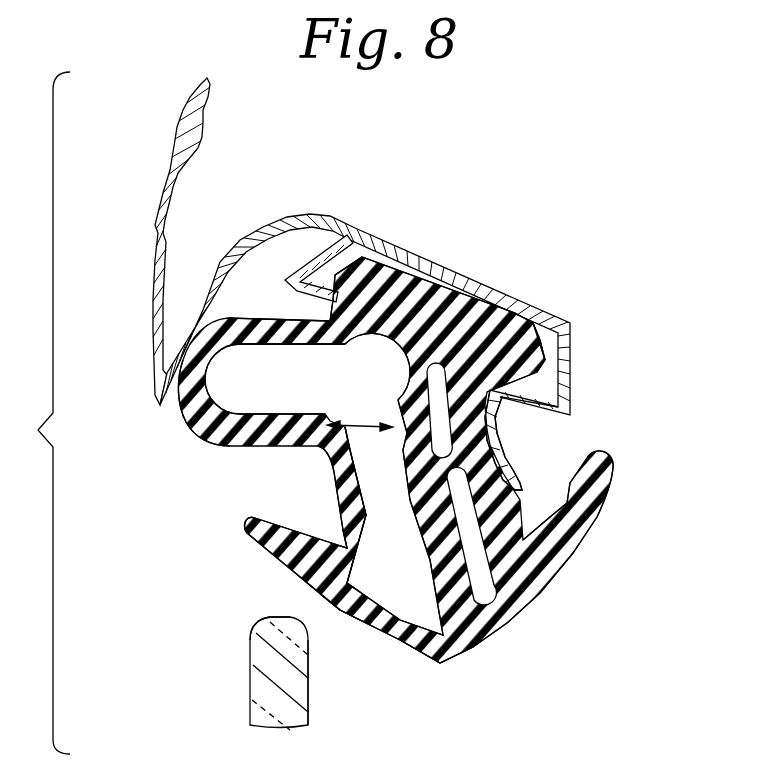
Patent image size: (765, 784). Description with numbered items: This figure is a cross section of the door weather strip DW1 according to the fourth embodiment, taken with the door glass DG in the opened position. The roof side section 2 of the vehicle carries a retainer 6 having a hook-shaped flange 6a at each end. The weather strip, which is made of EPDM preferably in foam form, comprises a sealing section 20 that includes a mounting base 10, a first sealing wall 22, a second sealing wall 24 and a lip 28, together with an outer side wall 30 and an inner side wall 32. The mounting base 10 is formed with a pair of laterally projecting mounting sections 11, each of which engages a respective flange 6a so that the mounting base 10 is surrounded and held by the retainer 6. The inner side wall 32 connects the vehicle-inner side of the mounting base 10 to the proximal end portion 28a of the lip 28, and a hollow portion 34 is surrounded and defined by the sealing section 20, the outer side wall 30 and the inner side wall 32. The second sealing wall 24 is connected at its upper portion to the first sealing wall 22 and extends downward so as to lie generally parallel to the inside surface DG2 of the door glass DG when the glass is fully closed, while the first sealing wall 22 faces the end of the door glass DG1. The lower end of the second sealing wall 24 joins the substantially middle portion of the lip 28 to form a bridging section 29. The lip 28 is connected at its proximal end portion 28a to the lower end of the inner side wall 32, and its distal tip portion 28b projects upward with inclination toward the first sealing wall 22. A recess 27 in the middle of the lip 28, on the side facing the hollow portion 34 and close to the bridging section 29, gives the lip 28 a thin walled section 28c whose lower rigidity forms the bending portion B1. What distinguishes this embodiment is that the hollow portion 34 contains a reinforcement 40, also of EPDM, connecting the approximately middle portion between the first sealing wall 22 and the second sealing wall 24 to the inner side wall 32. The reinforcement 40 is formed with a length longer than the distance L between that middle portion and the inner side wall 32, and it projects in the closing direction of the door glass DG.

The roof side section 2 is at (380, 284).
The retainer 6 is at (568, 340).
The hook-shaped flange 6a is at (307, 262).
The mounting base 10 is at (437, 310).
The mounting sections 11 is at (372, 262).
The sealing section 20 is at (393, 458).
The first sealing wall 22 is at (207, 440).
The second sealing wall 24 is at (333, 490).
The recess 27 is at (350, 586).
The lip 28 is at (262, 546).
The proximal end portion 28a is at (437, 665).
The distal end or tip portion 28b is at (250, 527).
The thin walled section 28c is at (332, 605).
The bridging section 29 is at (347, 548).
The outer side wall 30 is at (228, 320).
The inner side wall 32 is at (595, 548).
The hollow portion 34 is at (304, 394).
The reinforcement 40 is at (390, 430).
The distance L is at (357, 420).
The bending portion B1 is at (330, 602).
The door weather strip DW1 is at (179, 584).
The door glass DG is at (285, 677).
The end of door glass DG1 is at (258, 618).
The inside surface of the door glass DG2 is at (310, 700).